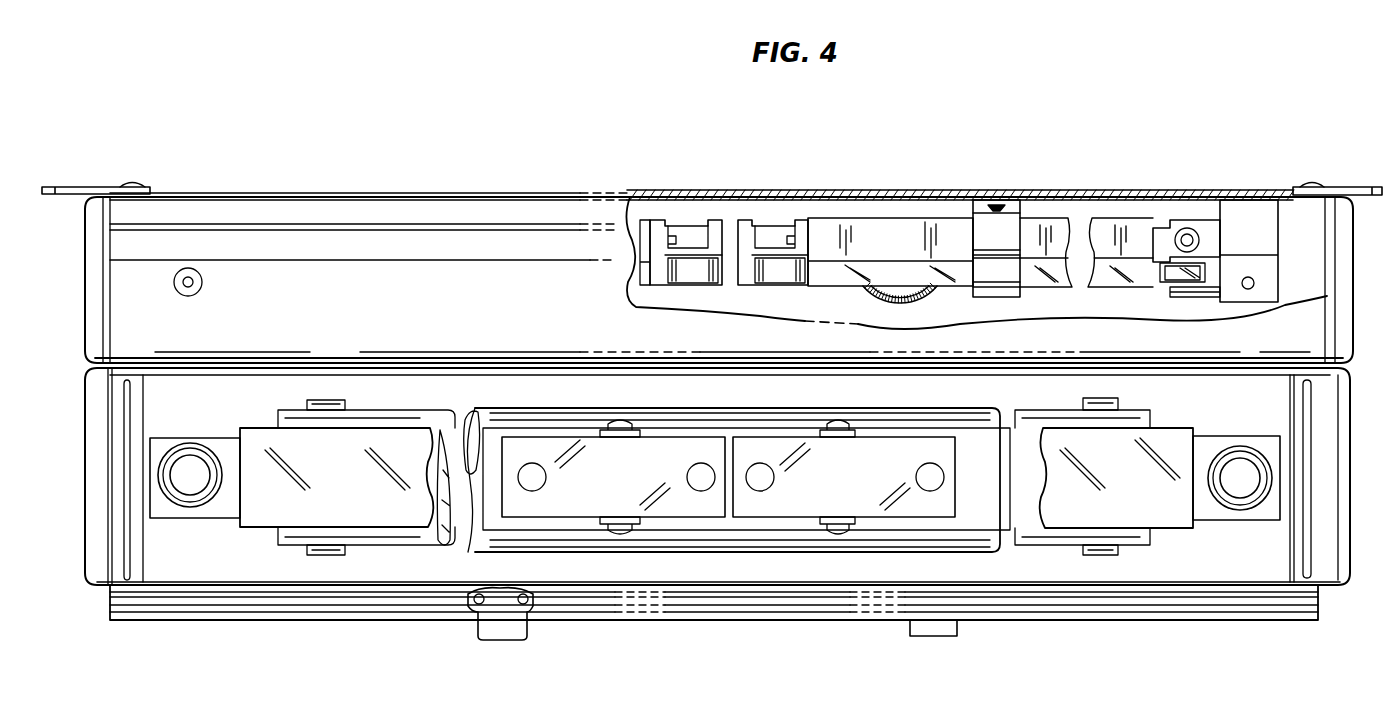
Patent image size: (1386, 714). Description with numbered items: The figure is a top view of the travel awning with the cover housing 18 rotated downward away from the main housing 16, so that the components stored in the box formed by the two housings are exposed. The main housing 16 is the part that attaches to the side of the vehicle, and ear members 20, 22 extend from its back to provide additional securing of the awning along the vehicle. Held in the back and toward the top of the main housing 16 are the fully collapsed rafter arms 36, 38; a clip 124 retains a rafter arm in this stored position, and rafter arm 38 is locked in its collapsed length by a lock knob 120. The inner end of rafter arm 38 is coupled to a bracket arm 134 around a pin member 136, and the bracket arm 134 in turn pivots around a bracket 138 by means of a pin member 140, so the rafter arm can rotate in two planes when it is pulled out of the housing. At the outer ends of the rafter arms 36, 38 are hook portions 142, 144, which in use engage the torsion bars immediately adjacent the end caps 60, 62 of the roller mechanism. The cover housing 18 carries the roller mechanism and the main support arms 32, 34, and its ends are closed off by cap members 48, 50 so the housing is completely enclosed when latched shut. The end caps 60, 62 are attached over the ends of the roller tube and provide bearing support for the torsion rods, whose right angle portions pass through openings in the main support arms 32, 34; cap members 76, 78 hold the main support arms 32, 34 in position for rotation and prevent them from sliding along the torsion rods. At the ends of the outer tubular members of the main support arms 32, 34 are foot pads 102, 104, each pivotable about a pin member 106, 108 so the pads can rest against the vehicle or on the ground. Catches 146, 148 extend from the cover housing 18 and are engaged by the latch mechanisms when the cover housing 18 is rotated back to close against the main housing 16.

The main housing 16 is at (255, 240).
The cover housing 18 is at (208, 572).
The ear member 20 is at (88, 188).
The ear member 22 is at (1348, 186).
The main support arm 32 is at (355, 445).
The main support arm 34 is at (1098, 448).
The rafter arm 36 is at (652, 226).
The rafter arm 38 is at (835, 248).
The cap member 48 is at (115, 445).
The cap member 50 is at (1340, 398).
The end cap 60 is at (325, 548).
The end cap 62 is at (1105, 548).
The cap member 76 is at (190, 458).
The cap member 78 is at (1237, 460).
The foot pad 102 is at (625, 486).
The foot pad 104 is at (853, 486).
The pin member 106 is at (618, 424).
The pin member 108 is at (836, 424).
The lock knob 120 is at (872, 292).
The clip 124 is at (1003, 232).
The bracket arm 134 is at (1178, 228).
The pin member 136 is at (1195, 232).
The bracket 138 is at (1249, 212).
The pin member 140 is at (1243, 290).
The hook portion 142 is at (690, 237).
The hook portion 144 is at (750, 242).
The catch 146 is at (492, 627).
The catch 148 is at (928, 640).